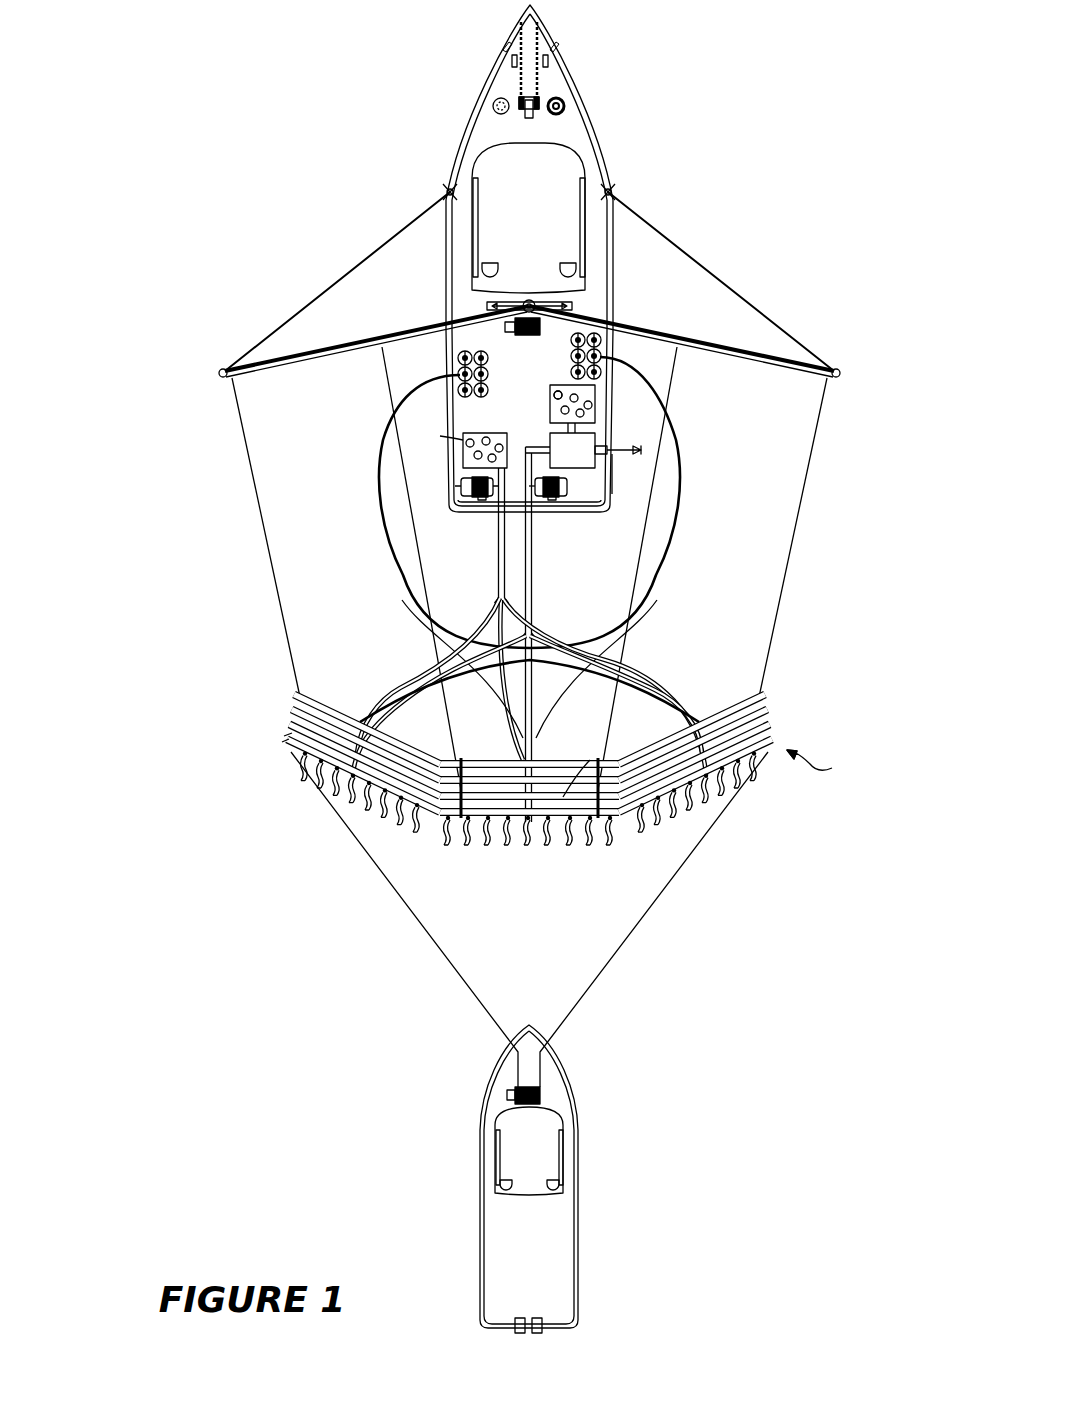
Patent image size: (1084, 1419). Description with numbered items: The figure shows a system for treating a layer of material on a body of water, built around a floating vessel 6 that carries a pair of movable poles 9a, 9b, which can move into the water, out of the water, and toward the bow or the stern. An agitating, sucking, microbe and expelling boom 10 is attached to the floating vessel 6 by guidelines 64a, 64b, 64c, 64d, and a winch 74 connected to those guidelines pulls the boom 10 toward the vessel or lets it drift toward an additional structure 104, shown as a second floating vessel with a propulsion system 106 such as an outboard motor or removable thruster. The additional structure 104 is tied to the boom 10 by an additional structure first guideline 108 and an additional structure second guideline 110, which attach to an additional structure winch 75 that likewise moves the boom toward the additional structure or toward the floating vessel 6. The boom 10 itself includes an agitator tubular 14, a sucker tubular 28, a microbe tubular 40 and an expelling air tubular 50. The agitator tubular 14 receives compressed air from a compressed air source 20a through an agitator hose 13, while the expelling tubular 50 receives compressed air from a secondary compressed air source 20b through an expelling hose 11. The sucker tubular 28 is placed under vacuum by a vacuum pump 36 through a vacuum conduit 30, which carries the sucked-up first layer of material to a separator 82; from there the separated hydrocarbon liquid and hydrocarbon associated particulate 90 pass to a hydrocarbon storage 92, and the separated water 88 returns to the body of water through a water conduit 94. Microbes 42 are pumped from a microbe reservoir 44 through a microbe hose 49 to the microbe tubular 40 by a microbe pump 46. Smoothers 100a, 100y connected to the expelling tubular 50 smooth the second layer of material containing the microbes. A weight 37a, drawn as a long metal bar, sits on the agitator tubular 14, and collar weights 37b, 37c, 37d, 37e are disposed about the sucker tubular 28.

The floating vessel 6 is at (583, 92).
The movable pole 9a is at (294, 370).
The movable pole 9b is at (764, 370).
The agitating, sucking, microbe and expelling boom 10 is at (663, 778).
The expelling hose 11 is at (674, 506).
The agitator hose 13 is at (382, 506).
The agitator tubular 14 is at (700, 714).
The compressed air source 20a is at (488, 372).
The secondary compressed air source 20b is at (571, 344).
The sucker tubular 28 is at (358, 714).
The vacuum conduit 30 is at (533, 546).
The vacuum pump 36 is at (568, 484).
The weight 37a is at (436, 750).
The weight 37b is at (334, 698).
The weight 37c is at (479, 767).
The weight 37d is at (586, 744).
The weight 37e is at (726, 698).
The microbe tubular 40 is at (586, 764).
The microbes 42 is at (470, 440).
The microbe reservoir 44 is at (456, 439).
The microbe pump 46 is at (461, 486).
The microbe hose 49 is at (498, 546).
The expelling air tubular 50 is at (292, 748).
The guideline 64a is at (240, 428).
The guideline 64b is at (386, 370).
The guideline 64c is at (673, 370).
The guideline 64d is at (822, 428).
The winch 74 is at (515, 326).
The additional structure winch 75 is at (508, 1092).
The separator 82 is at (596, 428).
The separated water 88 is at (610, 456).
The separated hydrocarbon liquid and hydrocarbon associated particulate 90 is at (554, 395).
The hydrocarbon storage 92 is at (596, 388).
The water conduit 94 is at (612, 494).
The smoother 100a is at (300, 792).
The smoother 100y is at (759, 792).
The additional structure 104 is at (568, 1075).
The propulsion system 106 is at (537, 1318).
The additional structure first guideline 108 is at (386, 900).
The additional structure second guideline 110 is at (664, 912).